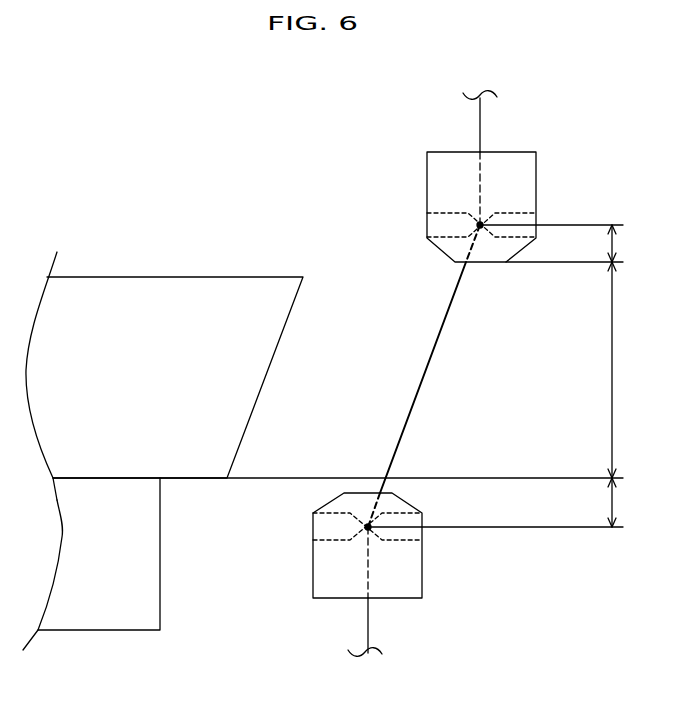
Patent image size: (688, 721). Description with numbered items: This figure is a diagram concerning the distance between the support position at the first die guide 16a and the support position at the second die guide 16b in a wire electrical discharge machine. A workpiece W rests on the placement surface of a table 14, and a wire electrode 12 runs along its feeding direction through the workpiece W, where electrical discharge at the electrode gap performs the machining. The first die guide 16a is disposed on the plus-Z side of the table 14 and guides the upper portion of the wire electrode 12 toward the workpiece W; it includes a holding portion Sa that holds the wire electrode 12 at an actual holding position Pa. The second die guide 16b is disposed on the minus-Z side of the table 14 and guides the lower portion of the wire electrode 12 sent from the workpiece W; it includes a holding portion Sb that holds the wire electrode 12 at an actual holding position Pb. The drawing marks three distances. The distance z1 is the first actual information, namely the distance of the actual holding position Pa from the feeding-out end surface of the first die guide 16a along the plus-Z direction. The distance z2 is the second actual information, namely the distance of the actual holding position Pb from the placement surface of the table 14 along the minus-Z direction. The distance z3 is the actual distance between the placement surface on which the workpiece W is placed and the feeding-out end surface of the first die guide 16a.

The workpiece W is at (118, 297).
The table 14 is at (102, 617).
The first die guide 16a is at (427, 163).
The second die guide 16b is at (313, 575).
The holding portion Sa is at (438, 225).
The holding portion Sb is at (325, 527).
The actual holding position Pa is at (480, 225).
The actual holding position Pb is at (368, 527).
The wire electrode 12 is at (437, 345).
The distance of the actual holding position Pa from the feeding-out end surface of t z1 is at (625, 243).
The distance of the actual holding position Pb from the placement surface of the tab z2 is at (625, 502).
The actual distance between the placement surface and the feeding-out end surface of z3 is at (625, 370).